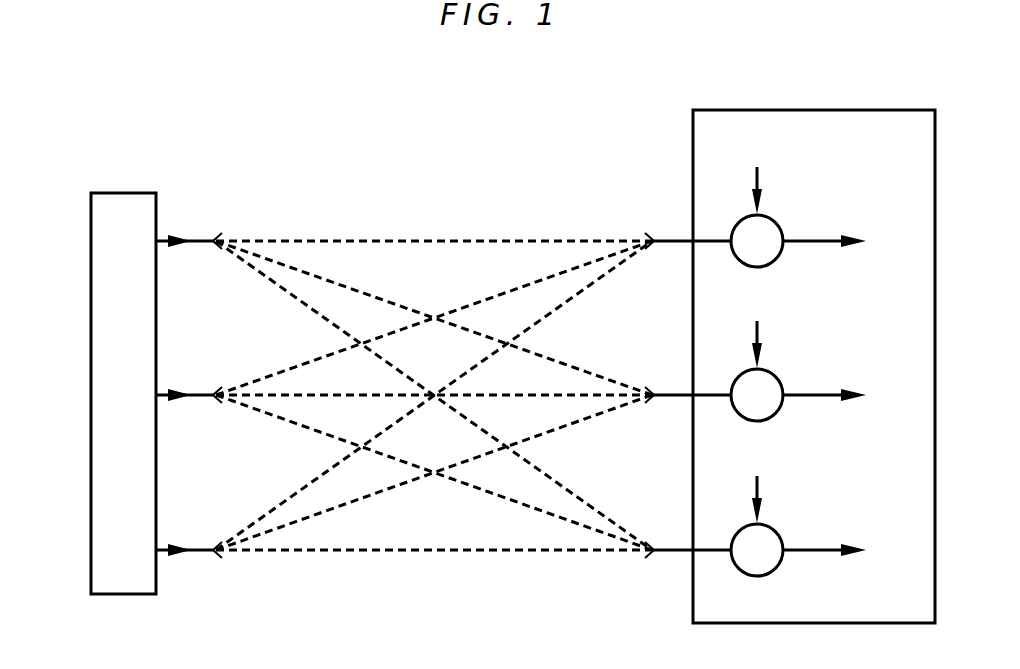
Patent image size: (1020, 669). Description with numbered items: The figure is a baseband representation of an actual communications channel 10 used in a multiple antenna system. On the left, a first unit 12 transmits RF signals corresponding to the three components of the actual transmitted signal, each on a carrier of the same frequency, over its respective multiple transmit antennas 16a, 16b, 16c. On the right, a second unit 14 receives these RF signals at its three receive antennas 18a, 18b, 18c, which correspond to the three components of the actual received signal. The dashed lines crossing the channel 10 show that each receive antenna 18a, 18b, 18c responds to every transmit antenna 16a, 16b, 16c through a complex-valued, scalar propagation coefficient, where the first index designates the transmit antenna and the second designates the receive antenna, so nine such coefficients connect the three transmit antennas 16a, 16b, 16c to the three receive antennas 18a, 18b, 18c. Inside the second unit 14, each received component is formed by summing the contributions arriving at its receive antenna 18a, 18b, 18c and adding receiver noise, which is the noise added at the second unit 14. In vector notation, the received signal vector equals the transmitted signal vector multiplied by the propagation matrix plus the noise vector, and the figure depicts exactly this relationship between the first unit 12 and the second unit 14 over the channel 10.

The communications channel 10 is at (511, 162).
The first unit 12 is at (128, 166).
The second unit 14 is at (724, 74).
The transmit antenna 16a is at (205, 239).
The transmit antenna 16b is at (205, 393).
The transmit antenna 16c is at (205, 548).
The receive antenna 18a is at (677, 239).
The receive antenna 18b is at (677, 393).
The receive antenna 18c is at (677, 548).